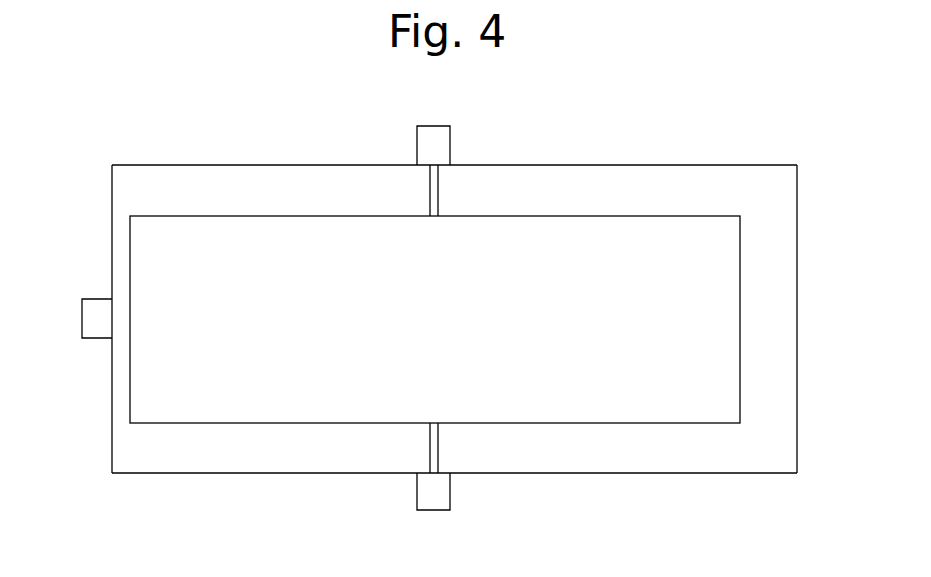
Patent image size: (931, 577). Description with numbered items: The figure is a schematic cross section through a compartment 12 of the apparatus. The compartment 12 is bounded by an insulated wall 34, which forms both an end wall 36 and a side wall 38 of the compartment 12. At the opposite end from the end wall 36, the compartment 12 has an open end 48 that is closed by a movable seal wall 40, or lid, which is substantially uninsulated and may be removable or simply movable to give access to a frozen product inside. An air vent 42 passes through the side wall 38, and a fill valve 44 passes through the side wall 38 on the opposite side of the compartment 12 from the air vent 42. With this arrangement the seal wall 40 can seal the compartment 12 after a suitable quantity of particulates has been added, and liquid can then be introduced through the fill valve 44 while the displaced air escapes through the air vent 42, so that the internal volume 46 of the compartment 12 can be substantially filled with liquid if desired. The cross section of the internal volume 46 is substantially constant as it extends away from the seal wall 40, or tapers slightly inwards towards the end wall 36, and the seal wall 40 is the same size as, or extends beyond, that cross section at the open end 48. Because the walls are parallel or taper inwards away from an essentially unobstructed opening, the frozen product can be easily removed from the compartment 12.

The compartment 12 is at (713, 139).
The insulated wall 34 is at (675, 473).
The end wall 36 is at (775, 321).
The side wall 38 is at (578, 187).
The seal wall 40 is at (118, 373).
The air vent 42 is at (428, 143).
The fill valve 44 is at (437, 500).
The internal volume 46 is at (300, 400).
The open end 48 is at (91, 246).